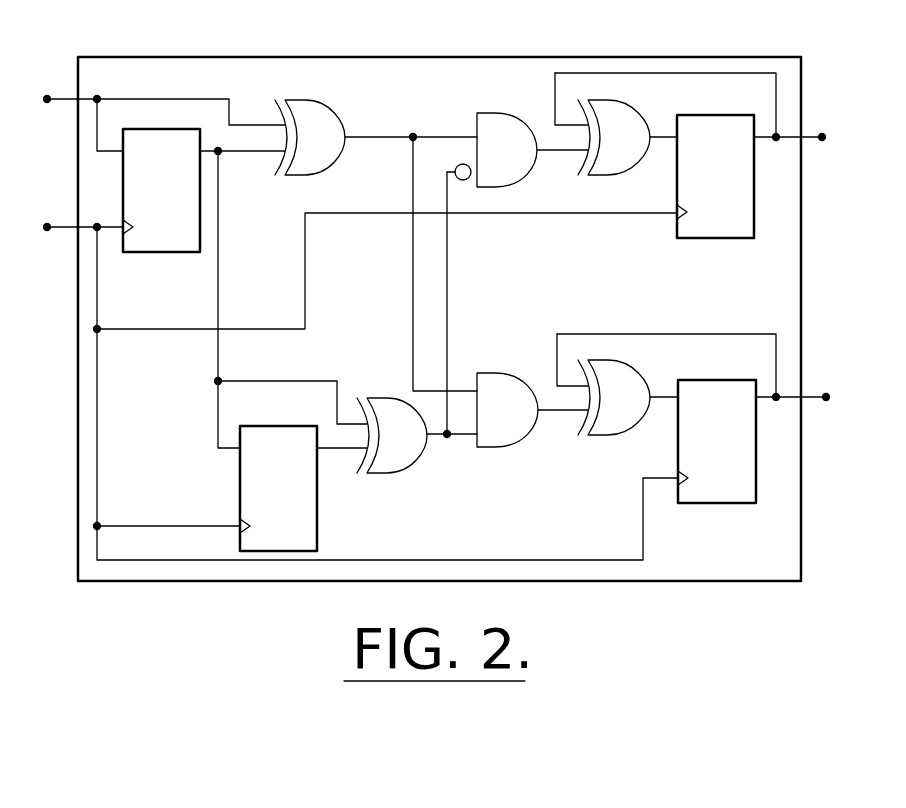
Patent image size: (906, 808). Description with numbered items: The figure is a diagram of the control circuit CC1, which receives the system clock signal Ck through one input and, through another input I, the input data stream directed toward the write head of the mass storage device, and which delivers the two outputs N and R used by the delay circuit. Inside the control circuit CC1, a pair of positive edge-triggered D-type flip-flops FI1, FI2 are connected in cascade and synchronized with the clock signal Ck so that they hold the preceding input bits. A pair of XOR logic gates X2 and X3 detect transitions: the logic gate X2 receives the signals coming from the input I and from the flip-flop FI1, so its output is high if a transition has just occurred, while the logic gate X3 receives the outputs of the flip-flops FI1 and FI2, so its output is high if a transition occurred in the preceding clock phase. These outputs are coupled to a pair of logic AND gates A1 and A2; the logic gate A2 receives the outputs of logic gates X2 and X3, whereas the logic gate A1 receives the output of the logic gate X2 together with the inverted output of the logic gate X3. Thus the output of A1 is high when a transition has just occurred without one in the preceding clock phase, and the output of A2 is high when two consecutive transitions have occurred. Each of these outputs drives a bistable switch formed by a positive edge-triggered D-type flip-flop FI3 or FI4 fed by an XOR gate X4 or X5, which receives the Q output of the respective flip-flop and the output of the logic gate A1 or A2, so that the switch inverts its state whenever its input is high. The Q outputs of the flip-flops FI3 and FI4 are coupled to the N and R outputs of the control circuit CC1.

The control circuit CC1 is at (732, 570).
The input I is at (65, 100).
The system clock signal Ck is at (65, 228).
The flip-flop FI1 is at (178, 238).
The flip-flop FI2 is at (308, 528).
The flip-flop FI3 is at (730, 223).
The flip-flop FI4 is at (732, 488).
The XOR logic gate X2 is at (313, 112).
The XOR logic gate X3 is at (400, 452).
The XOR logic gate X4 is at (605, 160).
The XOR logic gate X5 is at (605, 417).
The logic AND gate A1 is at (502, 123).
The logic AND gate A2 is at (500, 433).
The output N is at (803, 138).
The output R is at (803, 398).